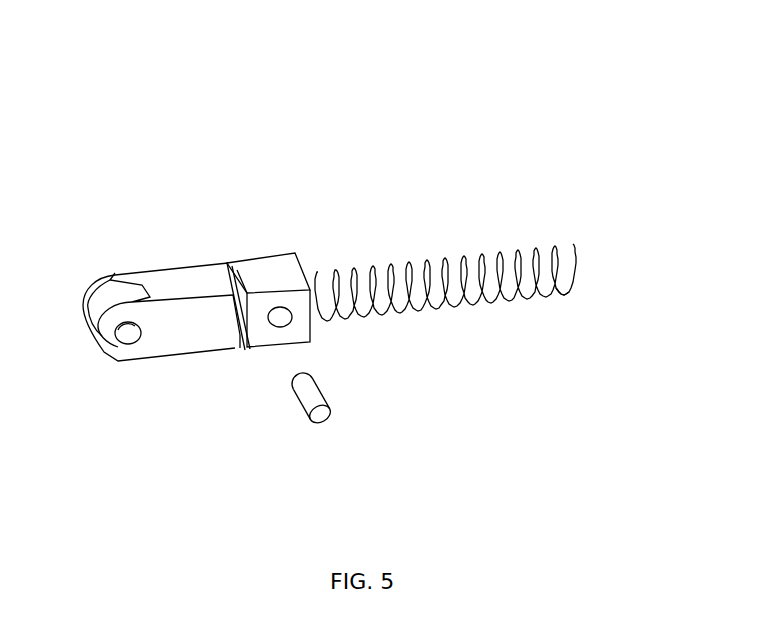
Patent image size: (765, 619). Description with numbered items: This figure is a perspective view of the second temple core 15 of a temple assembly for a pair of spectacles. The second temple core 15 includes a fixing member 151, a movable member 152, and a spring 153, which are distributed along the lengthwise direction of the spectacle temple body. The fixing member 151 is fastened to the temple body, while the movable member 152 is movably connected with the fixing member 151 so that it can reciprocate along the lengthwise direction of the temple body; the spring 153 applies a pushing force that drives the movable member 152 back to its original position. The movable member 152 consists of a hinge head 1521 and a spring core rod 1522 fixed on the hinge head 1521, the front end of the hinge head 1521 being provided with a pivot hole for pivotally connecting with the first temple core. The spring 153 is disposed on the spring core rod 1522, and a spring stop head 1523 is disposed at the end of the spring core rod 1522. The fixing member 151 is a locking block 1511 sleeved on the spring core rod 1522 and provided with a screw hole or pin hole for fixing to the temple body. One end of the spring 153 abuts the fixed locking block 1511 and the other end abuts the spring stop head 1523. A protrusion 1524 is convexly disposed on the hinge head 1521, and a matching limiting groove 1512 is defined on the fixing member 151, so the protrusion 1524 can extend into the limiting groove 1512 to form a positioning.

The second temple core 15 is at (498, 106).
The fixing member 151 is at (260, 268).
The locking block 1511 is at (277, 267).
The limiting groove 1512 is at (243, 337).
The movable member 152 is at (170, 280).
The hinge head 1521 is at (170, 335).
The spring core rod 1522 is at (446, 305).
The spring stop head 1523 is at (558, 282).
The protrusion 1524 is at (230, 330).
The spring 153 is at (397, 312).